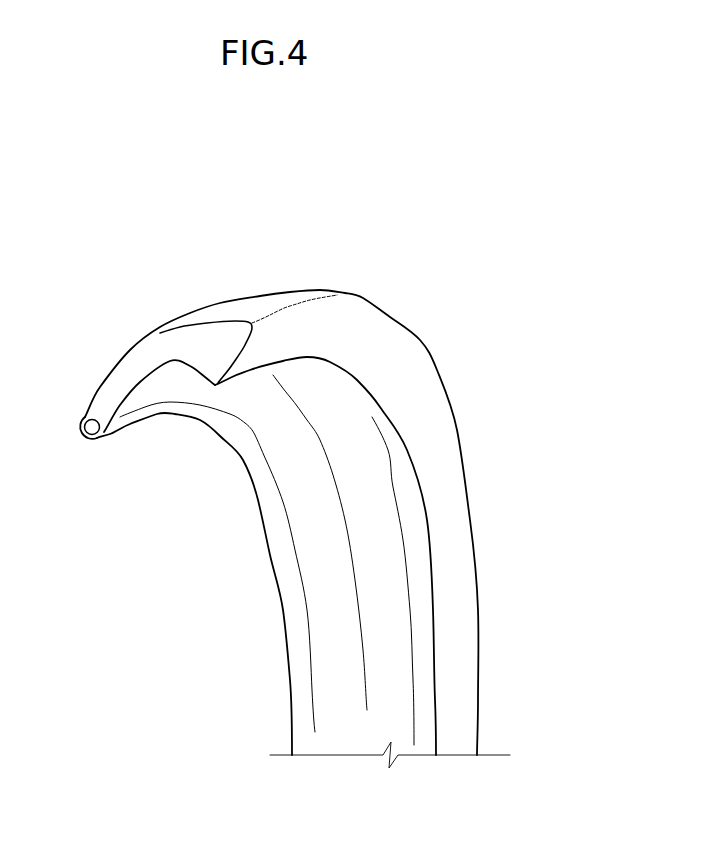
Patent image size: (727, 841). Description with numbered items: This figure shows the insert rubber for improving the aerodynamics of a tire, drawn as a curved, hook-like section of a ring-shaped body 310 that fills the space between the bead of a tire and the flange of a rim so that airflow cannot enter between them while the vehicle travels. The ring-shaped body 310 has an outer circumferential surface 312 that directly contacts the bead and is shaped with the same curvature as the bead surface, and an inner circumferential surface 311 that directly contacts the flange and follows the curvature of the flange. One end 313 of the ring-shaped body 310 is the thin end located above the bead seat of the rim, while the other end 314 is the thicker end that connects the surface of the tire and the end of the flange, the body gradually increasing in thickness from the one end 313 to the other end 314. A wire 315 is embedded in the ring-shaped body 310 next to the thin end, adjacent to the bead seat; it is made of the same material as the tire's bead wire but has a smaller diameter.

The ring-shaped body 310 is at (165, 625).
The inner circumferential surface 311 is at (304, 509).
The outer circumferential surface 312 is at (248, 303).
The one end 313 is at (92, 443).
The other end 314 is at (407, 370).
The wire 315 is at (83, 425).